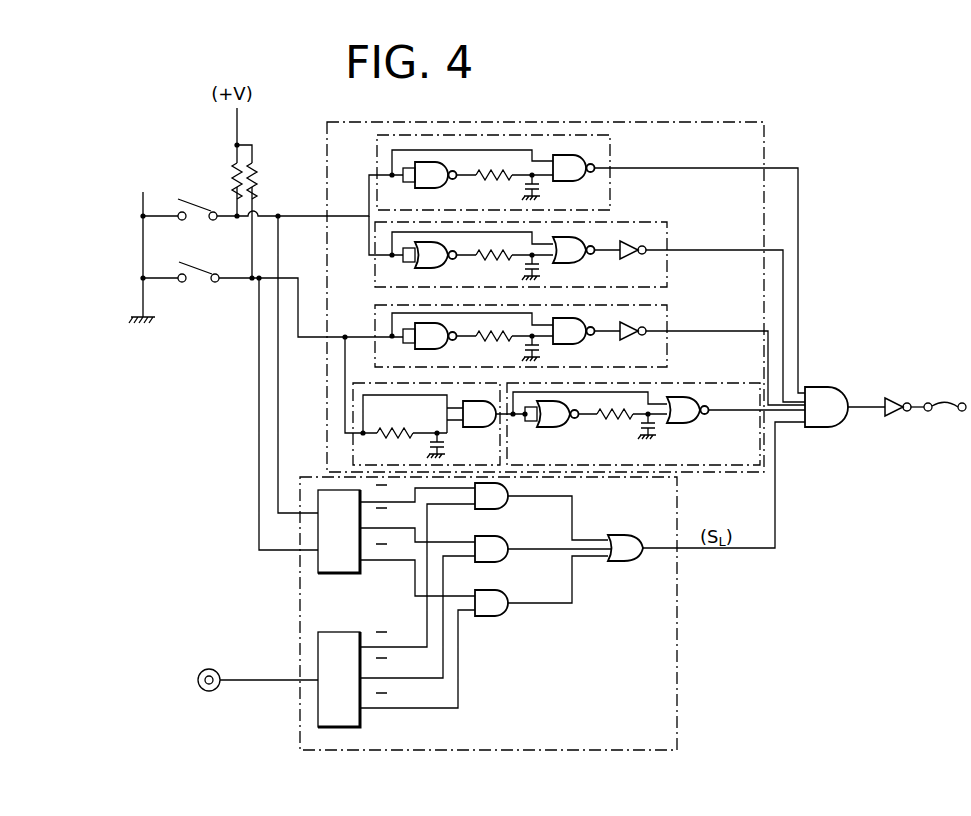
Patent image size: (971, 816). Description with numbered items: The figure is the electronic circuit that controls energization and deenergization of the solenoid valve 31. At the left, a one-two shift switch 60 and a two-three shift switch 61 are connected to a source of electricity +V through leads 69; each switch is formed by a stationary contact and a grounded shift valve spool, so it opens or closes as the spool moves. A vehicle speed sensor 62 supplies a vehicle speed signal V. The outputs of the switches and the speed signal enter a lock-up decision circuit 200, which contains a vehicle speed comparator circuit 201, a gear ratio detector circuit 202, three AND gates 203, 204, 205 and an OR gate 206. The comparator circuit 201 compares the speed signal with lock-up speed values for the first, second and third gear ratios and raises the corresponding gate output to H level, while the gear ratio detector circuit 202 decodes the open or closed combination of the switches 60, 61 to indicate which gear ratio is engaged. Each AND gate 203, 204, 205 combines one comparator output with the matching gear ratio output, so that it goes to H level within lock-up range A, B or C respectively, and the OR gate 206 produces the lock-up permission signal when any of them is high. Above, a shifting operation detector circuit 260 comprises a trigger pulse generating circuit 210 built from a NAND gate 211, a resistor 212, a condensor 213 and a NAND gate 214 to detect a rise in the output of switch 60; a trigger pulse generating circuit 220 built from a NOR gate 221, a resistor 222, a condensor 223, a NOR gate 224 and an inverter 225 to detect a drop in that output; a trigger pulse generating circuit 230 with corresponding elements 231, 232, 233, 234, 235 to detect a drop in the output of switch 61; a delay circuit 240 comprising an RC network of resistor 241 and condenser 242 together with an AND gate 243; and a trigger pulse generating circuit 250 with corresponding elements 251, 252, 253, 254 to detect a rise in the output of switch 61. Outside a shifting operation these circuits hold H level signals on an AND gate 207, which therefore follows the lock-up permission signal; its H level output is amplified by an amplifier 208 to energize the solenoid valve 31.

The solenoid valve 31 is at (962, 403).
The 1-2 shift switch 60 is at (204, 205).
The 2-3 shift switch 61 is at (205, 274).
The vehicle speed sensor 62 is at (209, 693).
The leads 69 is at (252, 243).
The lock-up decision circuit 200 is at (545, 753).
The vehicle speed comparator circuit 201 is at (364, 726).
The gear ratio detector circuit 202 is at (351, 577).
The AND gate 203 is at (508, 507).
The AND gate 204 is at (508, 560).
The AND gate 205 is at (508, 616).
The OR gate 206 is at (622, 562).
The AND gate 207 is at (835, 389).
The amplifier 208 is at (893, 397).
The trigger pulse generating circuit 210 is at (612, 139).
The NAND gate 211 is at (431, 183).
The resistor 212 is at (486, 190).
The condensor 213 is at (545, 189).
The NAND gate 214 is at (571, 155).
The trigger pulse generating circuit 220 is at (670, 224).
The NOR gate 221 is at (426, 266).
The resistor 222 is at (487, 269).
The condensor 223 is at (545, 266).
The NOR gate 224 is at (578, 247).
The inverter 225 is at (630, 259).
The trigger pulse generating circuit 230 is at (670, 306).
The gate 231 is at (426, 347).
The resistor 232 is at (511, 340).
The condensor 233 is at (545, 347).
The gate 234 is at (578, 328).
The inverter 235 is at (630, 340).
The delay circuit 240 is at (353, 437).
The resistor 241 is at (390, 447).
The condenser 242 is at (432, 431).
The AND gate 243 is at (474, 429).
The trigger pulse generating circuit 250 is at (715, 384).
The gate 251 is at (560, 426).
The resistor 252 is at (613, 420).
The condensor 253 is at (663, 429).
The gate 254 is at (683, 404).
The shifting operation detector circuit 260 is at (746, 121).